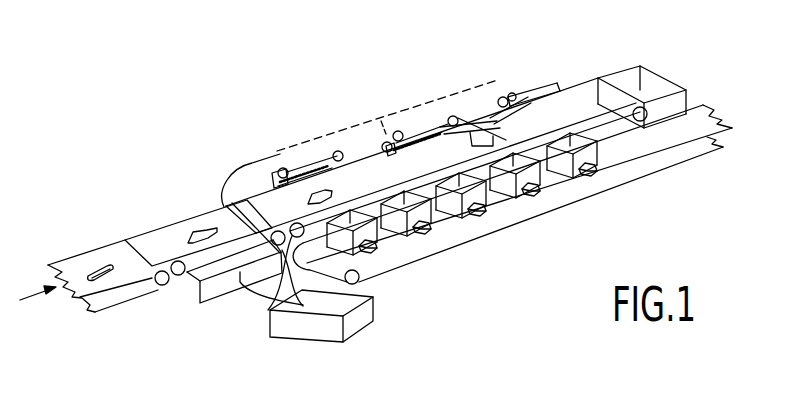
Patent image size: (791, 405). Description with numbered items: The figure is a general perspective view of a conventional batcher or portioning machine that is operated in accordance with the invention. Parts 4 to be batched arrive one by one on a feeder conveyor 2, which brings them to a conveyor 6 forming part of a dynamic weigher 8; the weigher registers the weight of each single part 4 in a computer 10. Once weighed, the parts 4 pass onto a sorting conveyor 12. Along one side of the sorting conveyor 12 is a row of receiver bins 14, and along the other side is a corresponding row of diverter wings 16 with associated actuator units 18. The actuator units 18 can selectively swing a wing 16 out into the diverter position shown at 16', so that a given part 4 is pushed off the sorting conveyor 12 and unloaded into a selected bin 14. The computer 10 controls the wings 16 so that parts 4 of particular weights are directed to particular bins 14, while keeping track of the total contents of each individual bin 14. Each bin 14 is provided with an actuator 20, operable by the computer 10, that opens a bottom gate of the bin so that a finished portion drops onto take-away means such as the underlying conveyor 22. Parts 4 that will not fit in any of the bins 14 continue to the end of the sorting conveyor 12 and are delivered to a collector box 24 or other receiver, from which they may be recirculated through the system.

The feeder conveyor 2 is at (133, 270).
The parts 4 is at (99, 268).
The conveyor 6 is at (217, 221).
The dynamic weigher 8 is at (222, 282).
The computer 10 is at (357, 318).
The sorting conveyor 12 is at (383, 172).
The receiver bins 14 is at (367, 231).
The diverter wings 16 is at (396, 125).
The diverter position 16' is at (529, 68).
The actuator units 18 is at (275, 176).
The actuator 20 is at (545, 192).
The underlying conveyor 22 is at (660, 138).
The collector box 24 is at (655, 85).